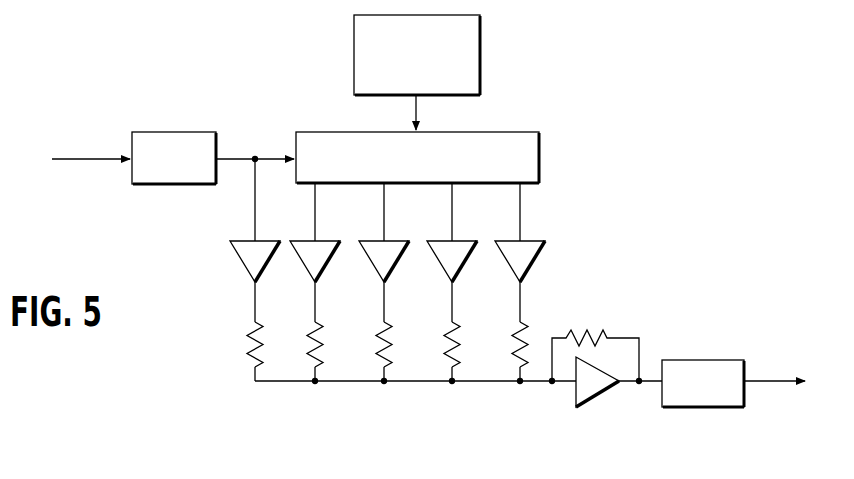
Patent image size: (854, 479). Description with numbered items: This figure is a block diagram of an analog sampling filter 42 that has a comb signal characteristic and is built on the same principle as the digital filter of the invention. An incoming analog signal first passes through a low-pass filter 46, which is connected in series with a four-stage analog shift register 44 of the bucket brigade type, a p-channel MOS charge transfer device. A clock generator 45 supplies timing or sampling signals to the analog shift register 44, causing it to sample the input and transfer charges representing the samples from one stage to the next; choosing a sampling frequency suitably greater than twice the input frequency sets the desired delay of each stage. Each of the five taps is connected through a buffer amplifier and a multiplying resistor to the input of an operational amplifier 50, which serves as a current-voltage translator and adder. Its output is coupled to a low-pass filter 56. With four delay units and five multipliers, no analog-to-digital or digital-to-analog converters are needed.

The analog sampling filter 42 is at (532, 102).
The analog shift register 44 is at (541, 158).
The clock generator 45 is at (480, 50).
The low-pass filter 46 is at (200, 132).
The operational amplifier 50 is at (598, 398).
The low-pass filter 56 is at (720, 408).